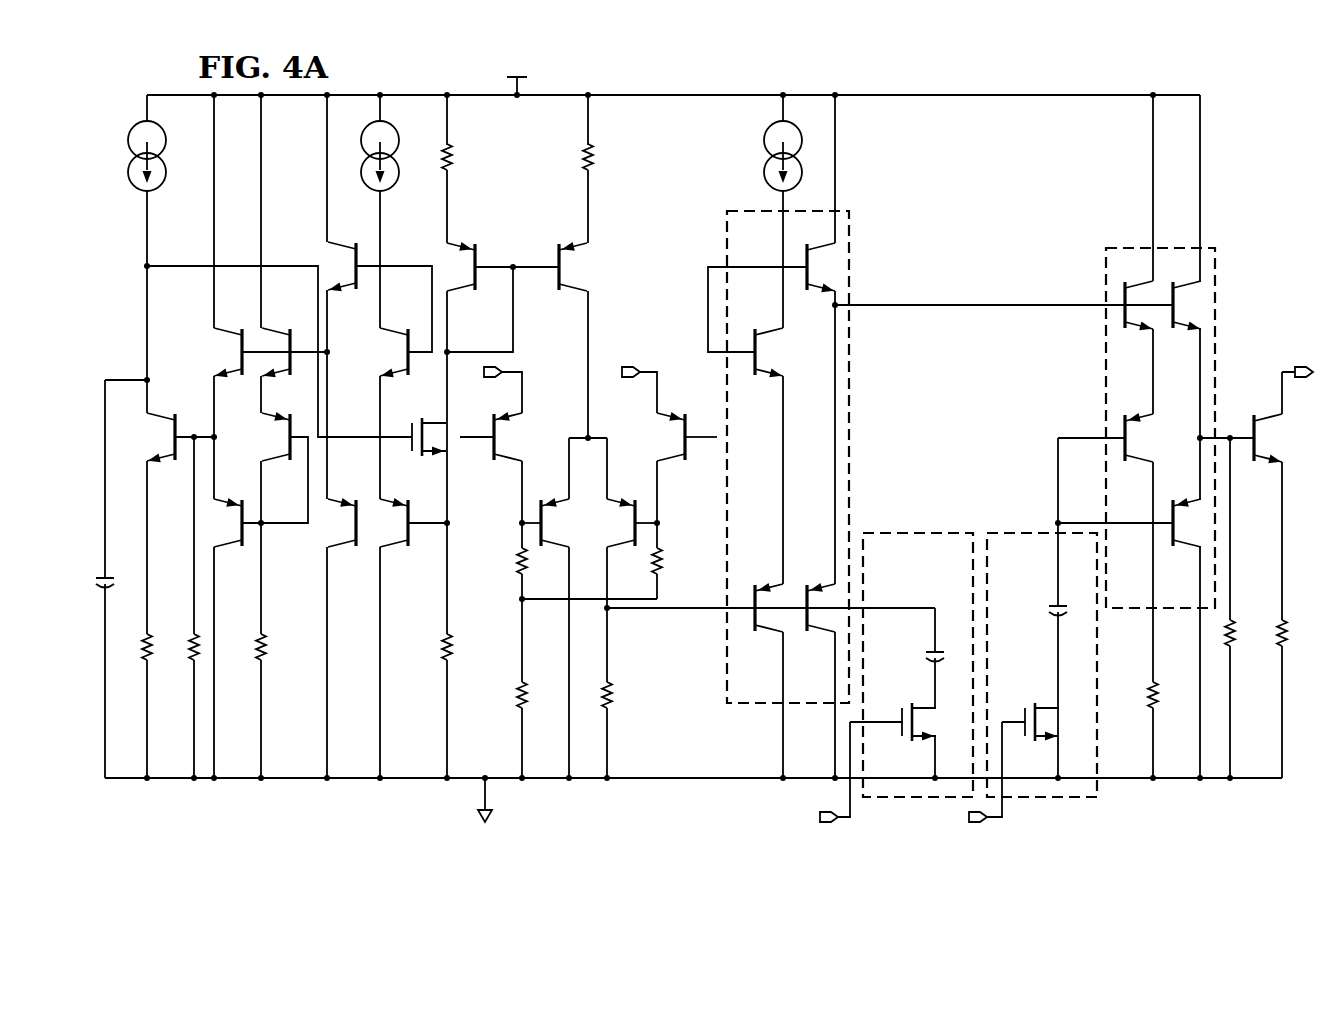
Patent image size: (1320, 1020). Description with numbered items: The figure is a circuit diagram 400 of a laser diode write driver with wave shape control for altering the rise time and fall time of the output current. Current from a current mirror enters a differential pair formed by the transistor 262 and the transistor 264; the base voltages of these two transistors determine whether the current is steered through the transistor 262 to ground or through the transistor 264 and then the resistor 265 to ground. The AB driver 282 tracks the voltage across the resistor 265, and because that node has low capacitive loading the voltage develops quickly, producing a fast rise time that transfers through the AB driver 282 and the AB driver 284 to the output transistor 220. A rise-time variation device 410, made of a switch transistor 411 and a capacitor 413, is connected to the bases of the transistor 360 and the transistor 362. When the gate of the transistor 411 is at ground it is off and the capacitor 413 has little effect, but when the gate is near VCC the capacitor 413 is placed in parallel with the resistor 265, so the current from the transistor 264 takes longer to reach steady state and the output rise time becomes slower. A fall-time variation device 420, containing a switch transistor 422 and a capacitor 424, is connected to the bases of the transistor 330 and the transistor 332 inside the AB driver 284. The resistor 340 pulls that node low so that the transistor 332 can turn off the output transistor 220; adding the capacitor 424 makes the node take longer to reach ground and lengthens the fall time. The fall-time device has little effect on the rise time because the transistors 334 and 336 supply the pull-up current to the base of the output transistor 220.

The circuit diagram 400 is at (1249, 94).
The output transistor 220 is at (1246, 452).
The transistor 262 is at (531, 502).
The transistor 264 is at (625, 502).
The resistor 265 is at (613, 698).
The AB driver 282 is at (815, 436).
The AB driver 284 is at (1173, 436).
The transistor 330 is at (1118, 452).
The transistor 332 is at (1166, 538).
The transistor 334 is at (1120, 320).
The transistor 336 is at (1168, 320).
The resistor 340 is at (1158, 700).
The transistor 360 is at (744, 620).
The transistor 362 is at (802, 620).
The rise-time variation device 410 is at (859, 651).
The transistor 411 is at (893, 718).
The capacitor 413 is at (928, 655).
The fall-time variation device 420 is at (996, 632).
The transistor 422 is at (1018, 718).
The capacitor 424 is at (1053, 604).